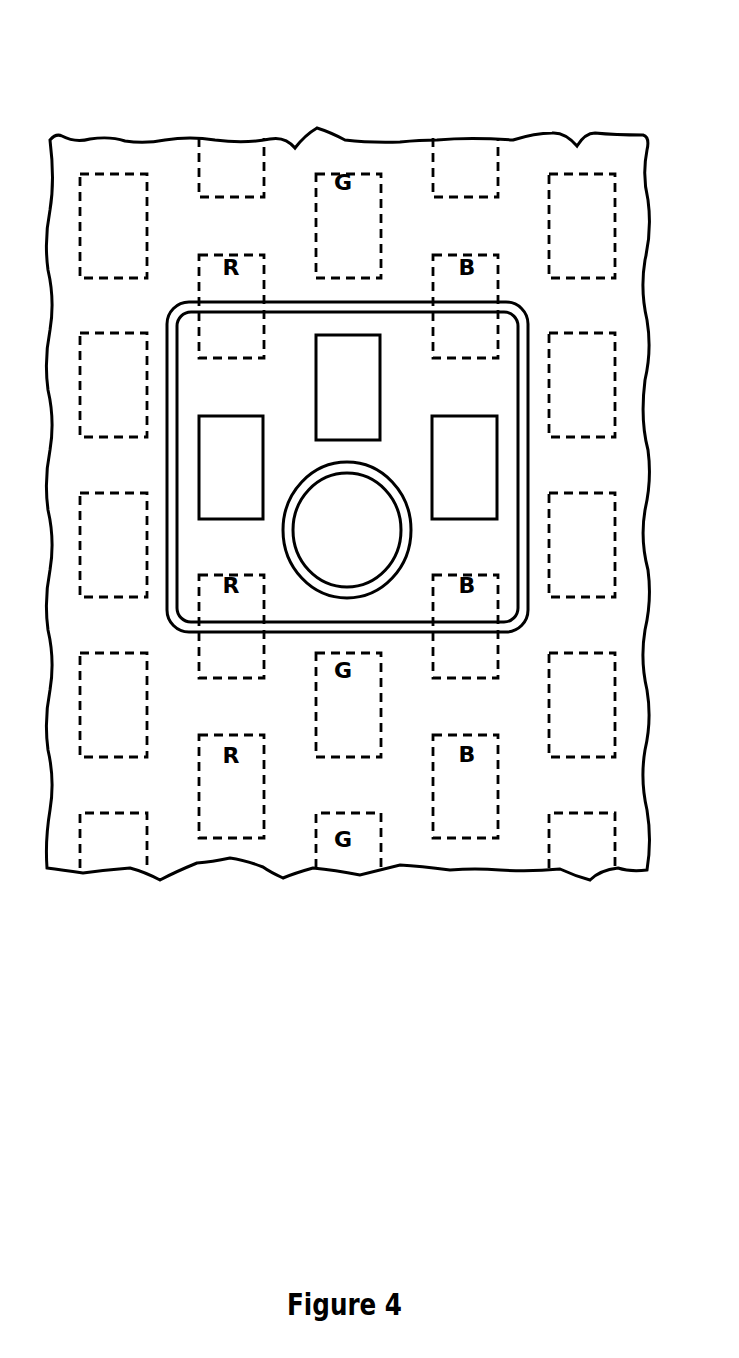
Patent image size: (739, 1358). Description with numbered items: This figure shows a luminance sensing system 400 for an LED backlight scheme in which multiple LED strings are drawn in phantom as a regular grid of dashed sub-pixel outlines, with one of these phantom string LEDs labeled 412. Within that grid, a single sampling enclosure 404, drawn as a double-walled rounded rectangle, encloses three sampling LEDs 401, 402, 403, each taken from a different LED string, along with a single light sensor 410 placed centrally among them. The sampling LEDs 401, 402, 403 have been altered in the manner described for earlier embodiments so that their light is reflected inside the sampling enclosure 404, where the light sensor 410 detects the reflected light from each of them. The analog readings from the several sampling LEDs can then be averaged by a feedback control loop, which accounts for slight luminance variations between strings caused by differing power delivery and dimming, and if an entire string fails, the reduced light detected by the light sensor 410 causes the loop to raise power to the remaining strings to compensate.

The luminance sensing system 400 is at (316, 98).
The sub-pixel (dashed, surrounding array) 412 is at (231, 191).
The sampling enclosure 404 is at (347, 467).
The sampling LED 401 is at (231, 467).
The sampling LED 402 is at (348, 387).
The sampling LED 403 is at (464, 467).
The light sensor 410 is at (347, 530).